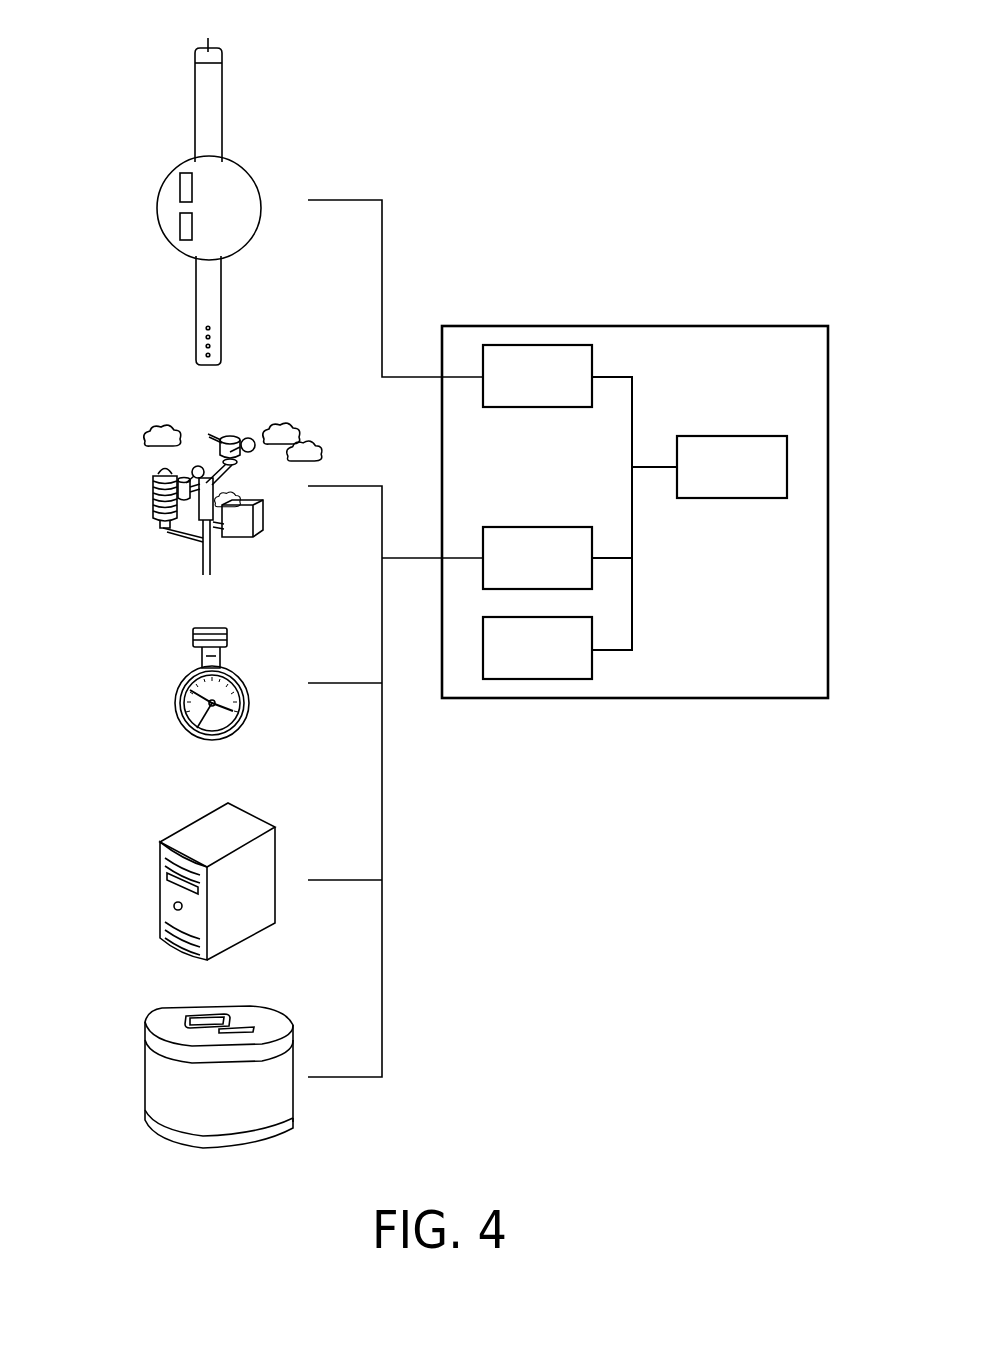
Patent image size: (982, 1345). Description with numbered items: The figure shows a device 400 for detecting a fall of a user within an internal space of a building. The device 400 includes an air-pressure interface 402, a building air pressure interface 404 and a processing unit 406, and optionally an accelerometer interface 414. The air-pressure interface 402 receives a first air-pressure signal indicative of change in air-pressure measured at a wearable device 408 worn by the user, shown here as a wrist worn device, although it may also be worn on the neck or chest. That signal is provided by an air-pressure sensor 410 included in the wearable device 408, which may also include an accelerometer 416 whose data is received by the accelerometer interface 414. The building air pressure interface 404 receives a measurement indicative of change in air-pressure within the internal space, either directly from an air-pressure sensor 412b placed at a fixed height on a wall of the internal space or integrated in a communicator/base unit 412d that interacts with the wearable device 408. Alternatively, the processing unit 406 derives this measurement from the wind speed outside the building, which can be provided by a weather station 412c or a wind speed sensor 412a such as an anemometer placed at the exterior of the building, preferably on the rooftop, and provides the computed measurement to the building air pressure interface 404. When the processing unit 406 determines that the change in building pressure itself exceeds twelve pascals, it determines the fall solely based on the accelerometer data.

The device for detecting a fall 400 is at (753, 683).
The air-pressure interface 402 is at (559, 392).
The building air pressure interface 404 is at (559, 572).
The processing unit 406 is at (753, 483).
The accelerometer interface 414 is at (559, 665).
The wearable device 408 is at (187, 157).
The air-pressure sensor 410 is at (180, 178).
The accelerometer 416 is at (180, 231).
The wind speed sensor 412a is at (141, 491).
The air-pressure sensor 412b is at (176, 697).
The weather station 412c is at (160, 889).
The communicator/base unit 412d is at (143, 1028).